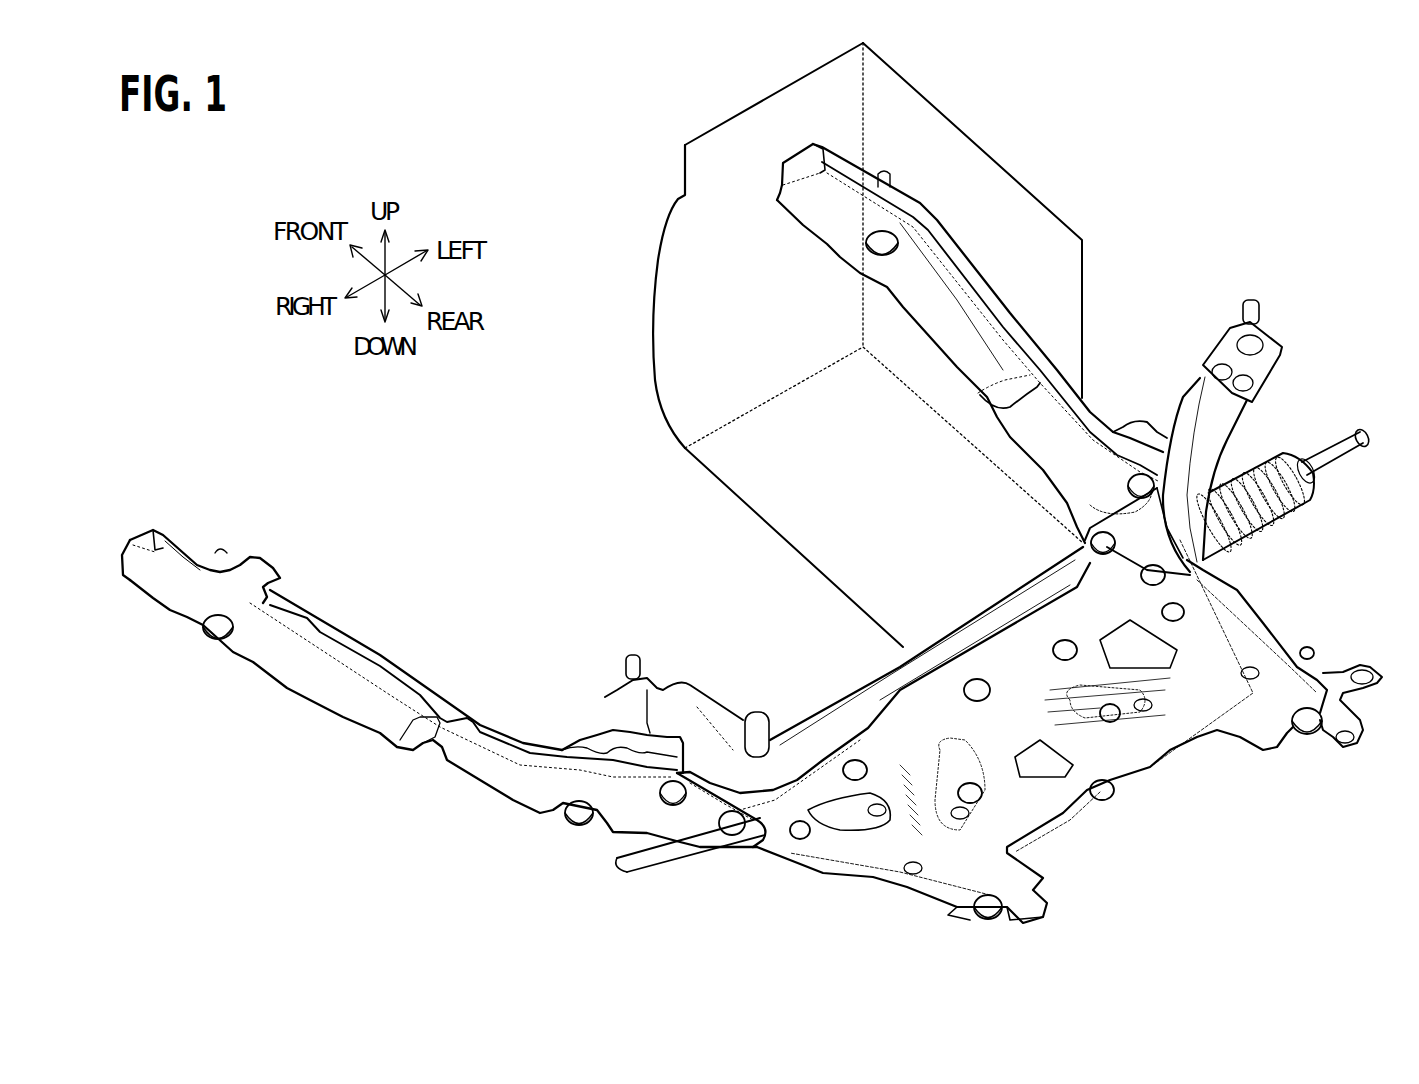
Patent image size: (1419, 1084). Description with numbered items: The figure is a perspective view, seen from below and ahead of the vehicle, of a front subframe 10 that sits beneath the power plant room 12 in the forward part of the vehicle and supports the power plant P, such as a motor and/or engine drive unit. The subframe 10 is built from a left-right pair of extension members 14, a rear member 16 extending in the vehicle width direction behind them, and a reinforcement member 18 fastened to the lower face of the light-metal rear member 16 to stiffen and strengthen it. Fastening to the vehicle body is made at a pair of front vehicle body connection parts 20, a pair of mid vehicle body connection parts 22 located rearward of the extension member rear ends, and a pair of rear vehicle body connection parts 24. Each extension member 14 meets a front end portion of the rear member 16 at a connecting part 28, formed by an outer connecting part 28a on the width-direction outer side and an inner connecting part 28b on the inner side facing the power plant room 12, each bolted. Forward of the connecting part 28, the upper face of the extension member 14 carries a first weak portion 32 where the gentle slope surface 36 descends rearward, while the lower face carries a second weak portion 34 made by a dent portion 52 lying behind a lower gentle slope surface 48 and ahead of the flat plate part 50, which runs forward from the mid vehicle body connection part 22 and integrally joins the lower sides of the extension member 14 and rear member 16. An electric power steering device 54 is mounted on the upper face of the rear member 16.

The front subframe 10 is at (1212, 176).
The power plant room 12 is at (563, 495).
The extension member 14 is at (1033, 320).
The rear member 16 is at (857, 673).
The reinforcement member 18 is at (1152, 784).
The front vehicle body connection part 20 is at (880, 258).
The mid vehicle body connection part 22 is at (1250, 298).
The rear vehicle body connection part 24 is at (1305, 735).
The connecting part 28 is at (1152, 536).
The outer connecting part 28a is at (1120, 517).
The inner connecting part 28b is at (1083, 547).
The first weak portion 32 is at (1123, 428).
The second weak portion 34 is at (1012, 405).
The gentle slope surface 36 is at (987, 285).
The gentle slope surface 48 is at (943, 317).
The flat plate part 50 is at (1050, 447).
The dent portion 52 is at (983, 397).
The electric power steering device 54 is at (1240, 465).
The power plant P is at (652, 237).